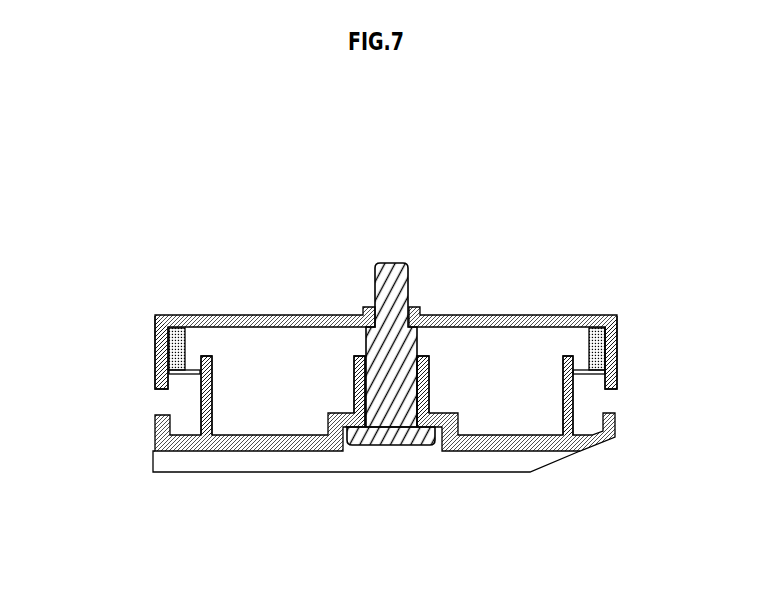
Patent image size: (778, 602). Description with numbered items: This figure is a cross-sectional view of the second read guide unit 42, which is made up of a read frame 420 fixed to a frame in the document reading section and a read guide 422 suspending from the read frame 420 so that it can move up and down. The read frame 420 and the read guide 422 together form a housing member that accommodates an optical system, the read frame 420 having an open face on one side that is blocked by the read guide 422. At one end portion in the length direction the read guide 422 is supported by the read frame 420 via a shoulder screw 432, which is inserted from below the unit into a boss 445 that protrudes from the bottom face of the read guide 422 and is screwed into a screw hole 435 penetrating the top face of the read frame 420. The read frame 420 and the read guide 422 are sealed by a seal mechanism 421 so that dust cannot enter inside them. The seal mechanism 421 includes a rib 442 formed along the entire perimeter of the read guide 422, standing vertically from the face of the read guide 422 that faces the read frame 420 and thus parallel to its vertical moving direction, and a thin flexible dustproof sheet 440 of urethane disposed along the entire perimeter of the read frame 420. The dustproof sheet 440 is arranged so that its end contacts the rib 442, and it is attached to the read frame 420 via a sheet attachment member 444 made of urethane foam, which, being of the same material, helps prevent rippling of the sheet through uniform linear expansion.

The second read guide unit 42 is at (285, 271).
The read frame 420 is at (598, 302).
The seal mechanism 421 is at (75, 374).
The read guide 422 is at (608, 457).
The shoulder screw 432 is at (393, 446).
The screw hole 435 is at (427, 312).
The dustproof sheet 440 is at (183, 380).
The rib 442 is at (203, 410).
The sheet attachment member 444 is at (172, 351).
The boss 445 is at (357, 383).